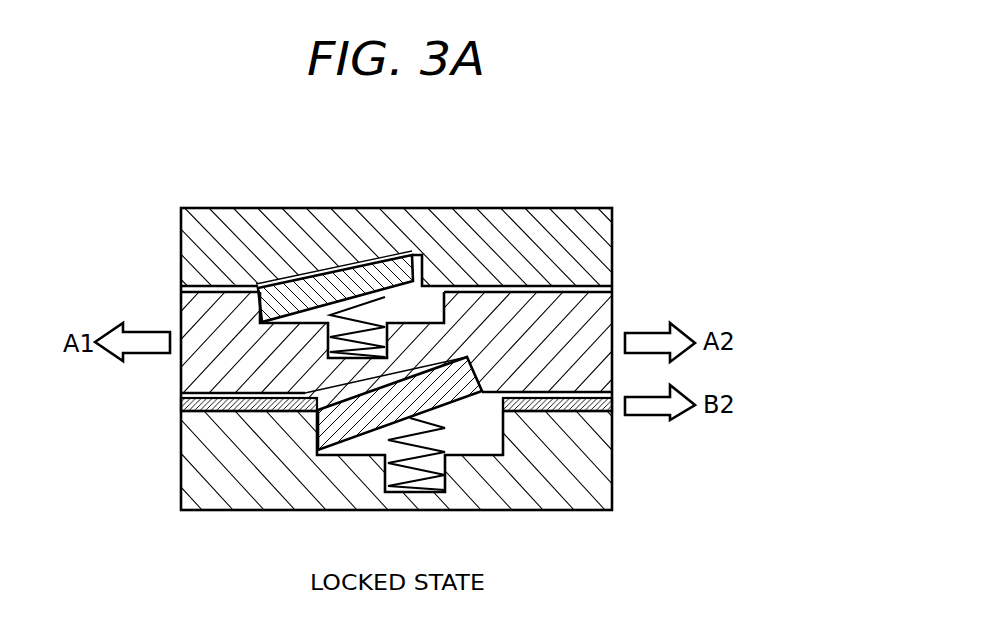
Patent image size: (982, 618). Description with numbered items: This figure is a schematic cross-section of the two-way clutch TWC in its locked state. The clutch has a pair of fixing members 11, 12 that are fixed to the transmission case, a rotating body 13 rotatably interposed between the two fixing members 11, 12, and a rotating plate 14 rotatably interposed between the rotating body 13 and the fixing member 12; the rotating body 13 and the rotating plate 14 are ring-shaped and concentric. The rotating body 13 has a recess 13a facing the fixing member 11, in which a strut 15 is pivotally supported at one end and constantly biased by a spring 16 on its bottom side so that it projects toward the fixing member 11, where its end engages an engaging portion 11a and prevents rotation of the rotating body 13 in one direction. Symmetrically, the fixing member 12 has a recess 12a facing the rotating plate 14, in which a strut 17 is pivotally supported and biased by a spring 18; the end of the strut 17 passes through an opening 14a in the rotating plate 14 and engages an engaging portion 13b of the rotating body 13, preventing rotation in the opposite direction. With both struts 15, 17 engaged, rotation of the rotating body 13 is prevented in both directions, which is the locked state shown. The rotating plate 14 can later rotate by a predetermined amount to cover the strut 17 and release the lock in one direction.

The two-way clutch TWC is at (548, 155).
The fixing member 11 is at (238, 228).
The engaging portion 11a is at (420, 272).
The fixing member 12 is at (233, 488).
The recess 12a is at (360, 445).
The rotating body 13 is at (580, 317).
The recess 13a is at (420, 323).
The engaging portion 13b is at (472, 418).
The rotating plate 14 is at (568, 407).
The opening 14a is at (503, 402).
The strut 15 is at (362, 273).
The spring 16 is at (353, 303).
The strut 17 is at (450, 408).
The spring 18 is at (415, 487).